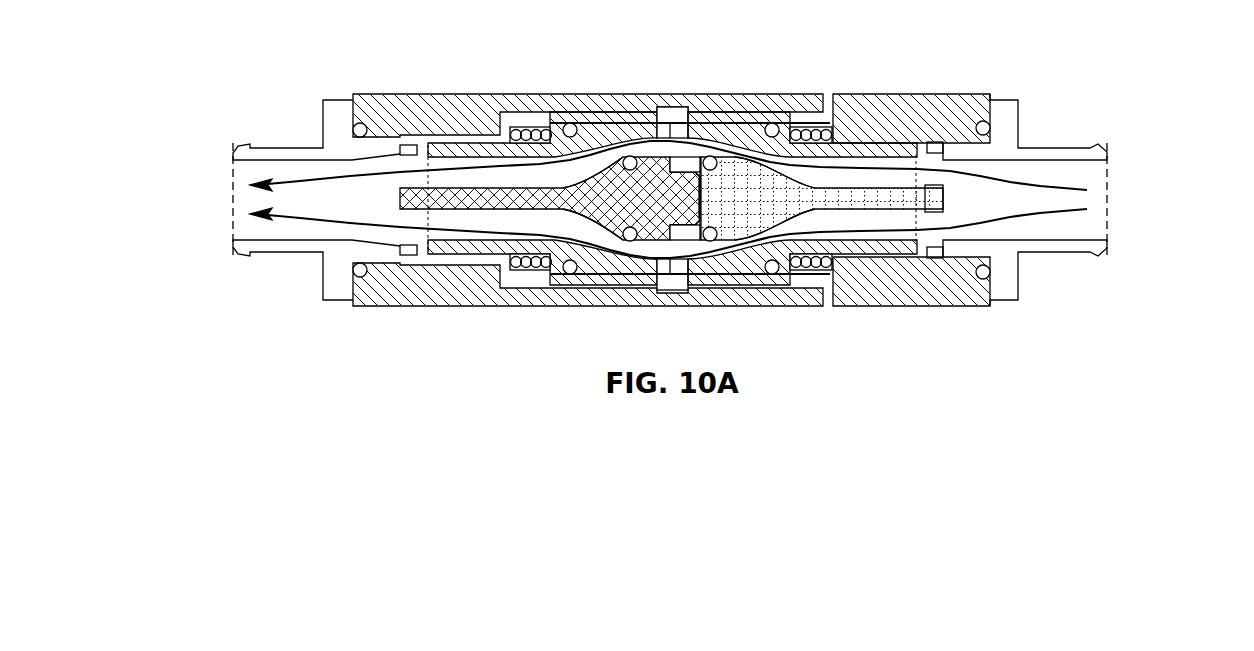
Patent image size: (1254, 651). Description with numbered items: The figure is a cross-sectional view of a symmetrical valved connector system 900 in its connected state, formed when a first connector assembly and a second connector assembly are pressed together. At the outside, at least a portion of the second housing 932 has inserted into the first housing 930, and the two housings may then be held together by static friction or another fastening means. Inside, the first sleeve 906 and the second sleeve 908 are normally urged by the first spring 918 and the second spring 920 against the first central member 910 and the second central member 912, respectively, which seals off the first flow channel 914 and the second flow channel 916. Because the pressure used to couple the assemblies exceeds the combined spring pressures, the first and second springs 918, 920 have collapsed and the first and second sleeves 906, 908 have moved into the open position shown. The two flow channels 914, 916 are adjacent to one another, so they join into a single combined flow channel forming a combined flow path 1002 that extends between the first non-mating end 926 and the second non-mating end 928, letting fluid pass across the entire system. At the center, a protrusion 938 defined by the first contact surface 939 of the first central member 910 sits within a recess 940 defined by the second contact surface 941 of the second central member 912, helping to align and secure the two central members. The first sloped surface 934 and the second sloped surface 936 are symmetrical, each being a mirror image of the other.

The valved connector system 900 is at (184, 42).
The first housing 930 is at (368, 112).
The second housing 932 is at (975, 111).
The first non-mating end 926 is at (181, 200).
The second non-mating end 928 is at (1165, 200).
The first sleeve 906 is at (565, 124).
The second sleeve 908 is at (727, 128).
The first spring 918 is at (512, 272).
The second spring 920 is at (828, 268).
The first central member 910 is at (453, 200).
The second central member 912 is at (860, 205).
The first sloped surface 934 is at (605, 205).
The second sloped surface 936 is at (724, 190).
The protrusion 938 is at (686, 195).
The recess 940 is at (699, 215).
The first contact surface 939 is at (688, 190).
The second contact surface 941 is at (700, 175).
The first flow channel 914 is at (480, 182).
The second flow channel 916 is at (856, 175).
The combined flow path 1002 is at (1047, 203).